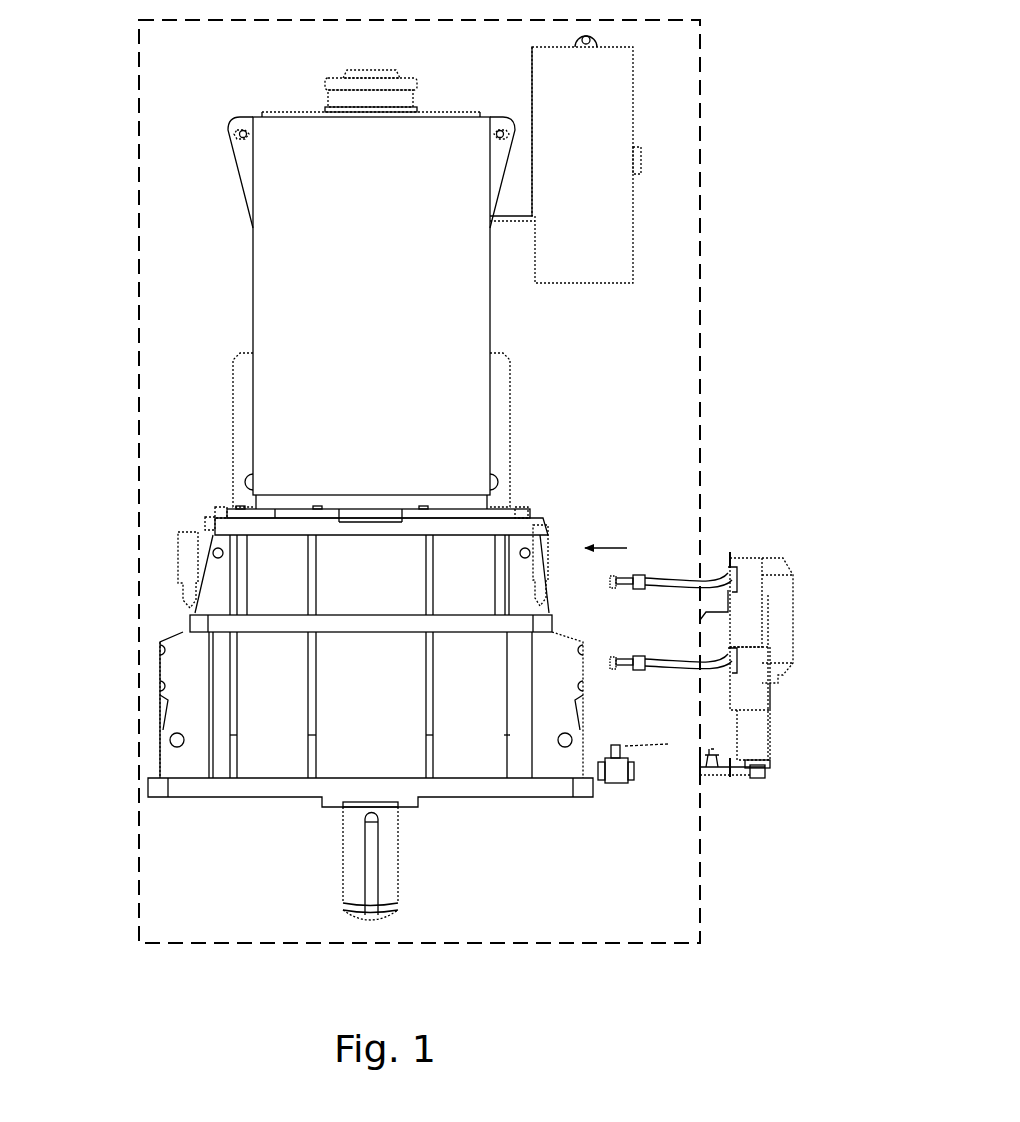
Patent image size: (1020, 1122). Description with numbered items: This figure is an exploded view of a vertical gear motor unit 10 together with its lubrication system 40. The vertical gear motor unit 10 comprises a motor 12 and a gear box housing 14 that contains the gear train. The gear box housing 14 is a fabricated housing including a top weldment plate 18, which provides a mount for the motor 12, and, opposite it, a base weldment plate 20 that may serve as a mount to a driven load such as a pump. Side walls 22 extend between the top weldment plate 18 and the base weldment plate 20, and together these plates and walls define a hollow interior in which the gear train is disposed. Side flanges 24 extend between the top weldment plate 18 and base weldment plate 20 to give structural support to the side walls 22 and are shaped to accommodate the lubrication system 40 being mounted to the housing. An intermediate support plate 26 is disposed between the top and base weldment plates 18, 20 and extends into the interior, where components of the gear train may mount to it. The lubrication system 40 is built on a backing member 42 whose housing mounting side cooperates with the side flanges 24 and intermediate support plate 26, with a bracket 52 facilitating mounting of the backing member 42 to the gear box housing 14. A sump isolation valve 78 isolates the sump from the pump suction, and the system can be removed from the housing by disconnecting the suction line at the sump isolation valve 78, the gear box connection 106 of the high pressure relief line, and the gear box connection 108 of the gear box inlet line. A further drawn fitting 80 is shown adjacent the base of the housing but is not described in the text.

The vertical gear motor unit 10 is at (116, 162).
The motor 12 is at (246, 262).
The gear box housing 14 is at (186, 808).
The top weldment plate 18 is at (212, 528).
The base weldment plate 20 is at (150, 792).
The side walls 22 is at (381, 719).
The side flanges 24 is at (183, 716).
The intermediate support plate 26 is at (192, 612).
The lubrication system 40 is at (796, 558).
The backing member 42 is at (730, 565).
The bracket 52 is at (703, 626).
The sump isolation valve 78 is at (710, 778).
The valve 80 is at (615, 786).
The gear box connection of the high pressure relief line 106 is at (623, 673).
The gear box connection of the gear box inlet line 108 is at (621, 590).